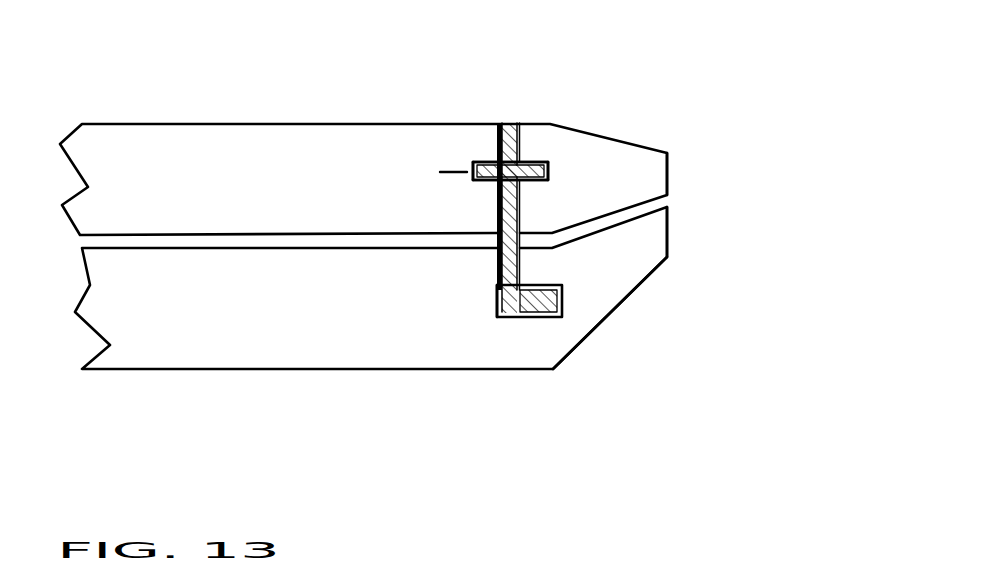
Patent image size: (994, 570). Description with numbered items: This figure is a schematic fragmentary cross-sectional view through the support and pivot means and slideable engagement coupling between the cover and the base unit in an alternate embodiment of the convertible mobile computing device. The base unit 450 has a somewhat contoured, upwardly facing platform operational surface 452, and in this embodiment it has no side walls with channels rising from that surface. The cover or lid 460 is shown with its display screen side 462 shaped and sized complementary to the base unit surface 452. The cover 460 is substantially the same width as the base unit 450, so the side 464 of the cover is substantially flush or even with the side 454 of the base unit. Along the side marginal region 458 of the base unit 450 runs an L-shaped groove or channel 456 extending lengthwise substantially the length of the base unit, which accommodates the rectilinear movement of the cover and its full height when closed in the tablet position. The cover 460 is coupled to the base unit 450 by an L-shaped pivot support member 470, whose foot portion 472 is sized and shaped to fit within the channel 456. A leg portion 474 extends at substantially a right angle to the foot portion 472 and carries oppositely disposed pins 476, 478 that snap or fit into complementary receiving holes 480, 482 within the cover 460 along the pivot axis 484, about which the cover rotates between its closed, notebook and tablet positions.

The base unit 450 is at (697, 237).
The platform operational surface 452 is at (118, 240).
The side of the base unit 454 is at (668, 243).
The L-shaped groove or channel 456 is at (496, 304).
The side marginal region 458 is at (556, 342).
The cover or lid 460 is at (353, 98).
The display screen side 462 is at (175, 248).
The side of the cover 464 is at (667, 172).
The L-shaped pivot support member 470 is at (592, 232).
The foot portion 472 is at (515, 300).
The leg portion 474 is at (530, 160).
The pin 476 is at (558, 160).
The pin 478 is at (487, 160).
The receiving hole 480 is at (545, 160).
The receiving hole 482 is at (473, 160).
The pivot axis 484 is at (548, 172).